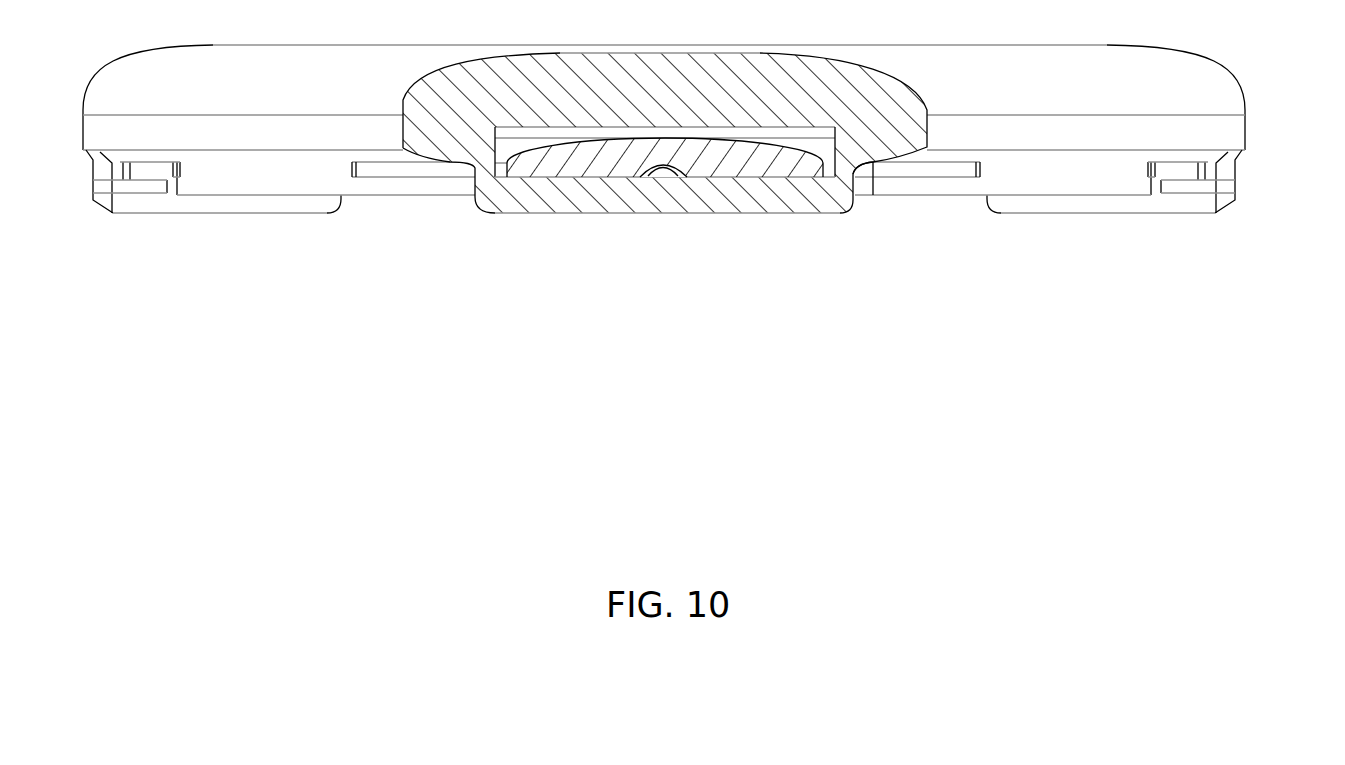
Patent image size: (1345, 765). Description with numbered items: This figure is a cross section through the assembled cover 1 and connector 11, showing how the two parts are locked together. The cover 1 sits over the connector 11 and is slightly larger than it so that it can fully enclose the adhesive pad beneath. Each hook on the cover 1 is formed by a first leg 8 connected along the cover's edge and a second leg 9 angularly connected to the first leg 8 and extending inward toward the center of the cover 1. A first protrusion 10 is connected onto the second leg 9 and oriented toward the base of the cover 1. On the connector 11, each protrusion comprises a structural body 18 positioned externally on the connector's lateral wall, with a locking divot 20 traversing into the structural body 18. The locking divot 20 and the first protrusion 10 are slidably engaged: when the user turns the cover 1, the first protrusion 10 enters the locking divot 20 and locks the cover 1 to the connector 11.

The cover 1 is at (1258, 91).
The first leg 8 is at (857, 170).
The second leg 9 is at (827, 207).
The first protrusion 10 is at (663, 175).
The connector 11 is at (400, 203).
The structural body 18 is at (550, 168).
The locking divot 20 is at (669, 158).